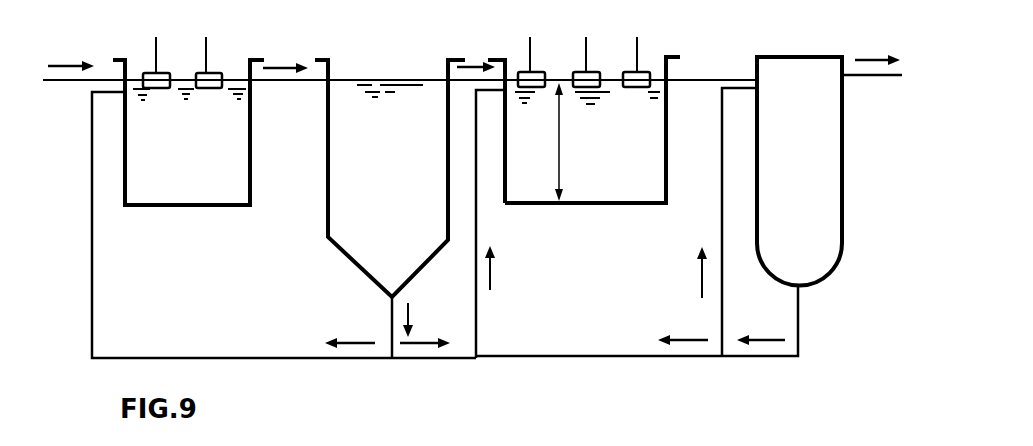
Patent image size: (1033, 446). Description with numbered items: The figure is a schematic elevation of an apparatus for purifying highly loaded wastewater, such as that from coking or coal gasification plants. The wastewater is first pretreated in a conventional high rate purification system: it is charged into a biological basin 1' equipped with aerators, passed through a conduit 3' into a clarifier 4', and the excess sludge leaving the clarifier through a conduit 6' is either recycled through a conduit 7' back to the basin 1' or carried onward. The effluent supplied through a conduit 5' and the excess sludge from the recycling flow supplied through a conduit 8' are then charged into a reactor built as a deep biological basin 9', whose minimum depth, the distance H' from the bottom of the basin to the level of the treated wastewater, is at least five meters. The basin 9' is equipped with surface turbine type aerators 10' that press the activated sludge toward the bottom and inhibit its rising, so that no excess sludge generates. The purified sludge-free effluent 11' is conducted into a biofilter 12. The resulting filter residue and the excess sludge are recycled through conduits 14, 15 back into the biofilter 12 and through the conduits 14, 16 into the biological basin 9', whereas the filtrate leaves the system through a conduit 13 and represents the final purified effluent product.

The biological basin 1' is at (195, 145).
The conduit 3' is at (285, 100).
The clarifier 4' is at (374, 178).
The conduit 5' is at (480, 209).
The conduit 6' is at (369, 323).
The conduit 7' is at (242, 225).
The conduit 8' is at (434, 372).
The biological basin 9' is at (592, 149).
The surface turbine type aerator 10' is at (635, 108).
The effluent conduit 11' is at (711, 104).
The biofilter 12 is at (843, 193).
The conduit 13 is at (862, 77).
The conduit 14 is at (760, 357).
The conduit 15 is at (725, 280).
The conduit 16 is at (612, 357).
The distance H' is at (543, 142).